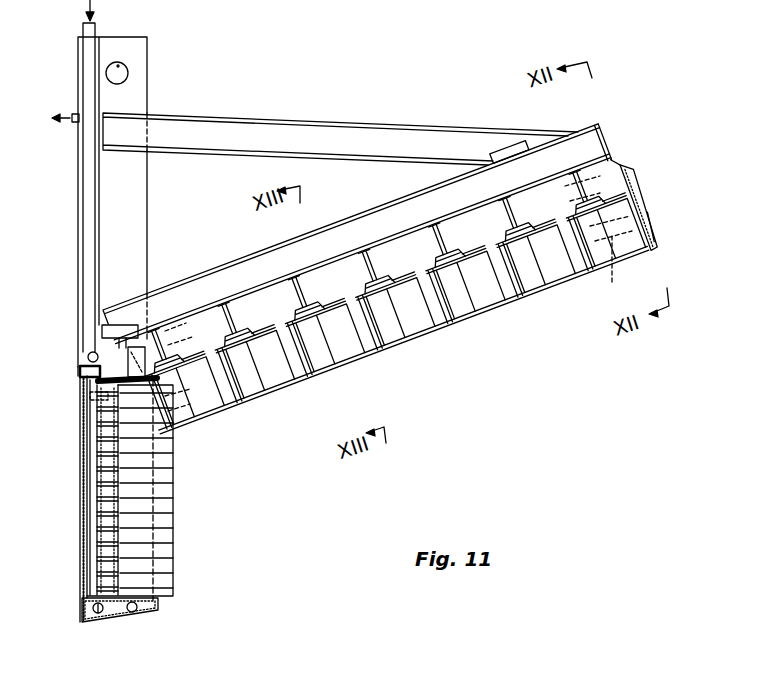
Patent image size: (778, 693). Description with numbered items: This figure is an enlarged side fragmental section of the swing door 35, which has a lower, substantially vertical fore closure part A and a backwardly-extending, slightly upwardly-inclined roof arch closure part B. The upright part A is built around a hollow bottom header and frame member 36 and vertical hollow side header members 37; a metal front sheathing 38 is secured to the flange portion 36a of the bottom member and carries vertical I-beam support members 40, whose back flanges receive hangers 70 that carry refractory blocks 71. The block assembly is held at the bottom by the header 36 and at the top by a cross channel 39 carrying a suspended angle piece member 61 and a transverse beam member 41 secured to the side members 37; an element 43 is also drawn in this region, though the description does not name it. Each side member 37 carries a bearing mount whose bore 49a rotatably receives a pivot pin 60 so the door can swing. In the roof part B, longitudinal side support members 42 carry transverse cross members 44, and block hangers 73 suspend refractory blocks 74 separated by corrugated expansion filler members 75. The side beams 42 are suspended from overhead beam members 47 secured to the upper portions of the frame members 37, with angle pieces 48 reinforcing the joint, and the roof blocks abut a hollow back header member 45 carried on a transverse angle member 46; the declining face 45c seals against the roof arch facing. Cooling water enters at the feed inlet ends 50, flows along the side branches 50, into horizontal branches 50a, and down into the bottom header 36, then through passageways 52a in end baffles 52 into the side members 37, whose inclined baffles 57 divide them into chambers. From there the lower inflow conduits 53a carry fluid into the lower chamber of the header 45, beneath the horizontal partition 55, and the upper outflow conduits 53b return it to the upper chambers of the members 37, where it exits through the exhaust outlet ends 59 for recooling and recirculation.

The swing door 35 is at (365, 249).
The bottom header and hollow frame member 36 is at (82, 610).
The flange portion 36a is at (85, 598).
The vertical side header and hollow side frame member 37 is at (148, 252).
The metal front sheathing 38 is at (82, 476).
The cross channel 39 is at (80, 371).
The support member 40 is at (82, 431).
The beam member 41 is at (127, 355).
The side support member 42 is at (222, 266).
The housing 43 is at (115, 325).
The cross member 44 is at (370, 267).
The back header member 45 is at (628, 171).
The declining face 45c is at (645, 212).
The angle member 46 is at (610, 160).
The overhead beam member 47 is at (413, 124).
The angle piece 48 is at (530, 142).
The bore 49a is at (120, 66).
The feed inlet end / vertical side branch 50 is at (83, 27).
The horizontal branch 50a is at (88, 354).
The end baffle 52 is at (158, 606).
The passageway 52a is at (98, 614).
The lower conduit pair 53a is at (195, 429).
The upper conduit pair 53b is at (178, 333).
The horizontal partition member 55 is at (650, 221).
The inclined baffle 57 is at (90, 397).
The exhaust outlet end 59 is at (72, 123).
The pivot pin 60 is at (125, 78).
The angle piece member 61 is at (96, 381).
The hanger 70 is at (97, 517).
The refractory block 71 is at (173, 528).
The block hanger 73 is at (306, 308).
The refractory block 74 is at (450, 319).
The expansion filler member 75 is at (365, 358).
The fore closure part A is at (173, 488).
The roof arch closure part B is at (417, 331).